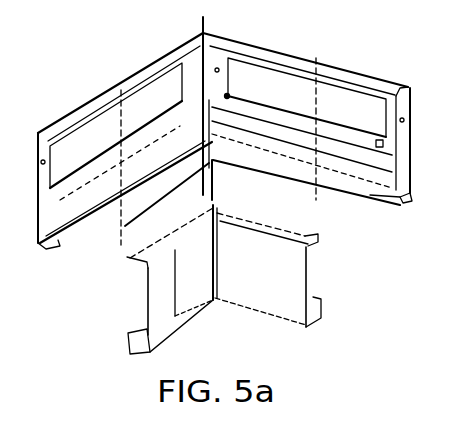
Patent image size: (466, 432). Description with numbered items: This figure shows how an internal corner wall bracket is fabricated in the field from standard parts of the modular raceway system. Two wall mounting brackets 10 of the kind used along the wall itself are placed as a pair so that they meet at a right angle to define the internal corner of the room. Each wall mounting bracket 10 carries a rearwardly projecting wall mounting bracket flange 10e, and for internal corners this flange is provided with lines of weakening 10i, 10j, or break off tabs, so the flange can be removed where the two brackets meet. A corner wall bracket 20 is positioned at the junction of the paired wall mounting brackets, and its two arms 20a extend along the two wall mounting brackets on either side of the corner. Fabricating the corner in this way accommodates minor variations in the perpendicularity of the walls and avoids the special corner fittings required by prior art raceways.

The wall mounting bracket 10 is at (111, 77).
The wall mounting bracket flange 10e is at (282, 176).
The line of weakening 10i is at (70, 241).
The line of weakening 10j is at (372, 196).
The corner wall bracket 20 is at (263, 325).
The corner bracket arm 20a is at (170, 233).